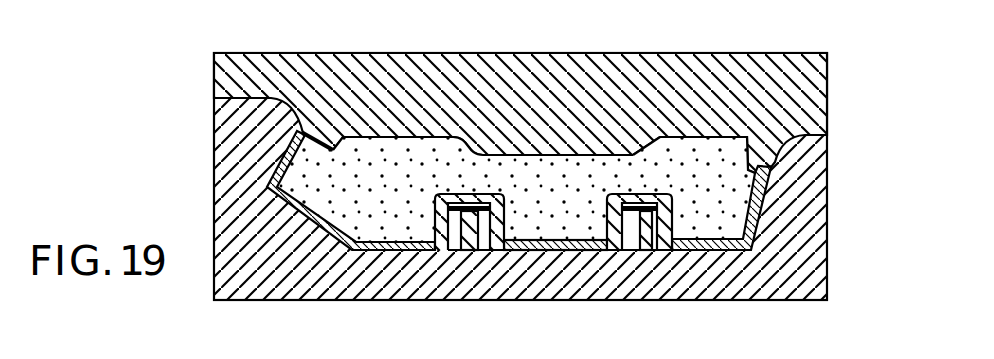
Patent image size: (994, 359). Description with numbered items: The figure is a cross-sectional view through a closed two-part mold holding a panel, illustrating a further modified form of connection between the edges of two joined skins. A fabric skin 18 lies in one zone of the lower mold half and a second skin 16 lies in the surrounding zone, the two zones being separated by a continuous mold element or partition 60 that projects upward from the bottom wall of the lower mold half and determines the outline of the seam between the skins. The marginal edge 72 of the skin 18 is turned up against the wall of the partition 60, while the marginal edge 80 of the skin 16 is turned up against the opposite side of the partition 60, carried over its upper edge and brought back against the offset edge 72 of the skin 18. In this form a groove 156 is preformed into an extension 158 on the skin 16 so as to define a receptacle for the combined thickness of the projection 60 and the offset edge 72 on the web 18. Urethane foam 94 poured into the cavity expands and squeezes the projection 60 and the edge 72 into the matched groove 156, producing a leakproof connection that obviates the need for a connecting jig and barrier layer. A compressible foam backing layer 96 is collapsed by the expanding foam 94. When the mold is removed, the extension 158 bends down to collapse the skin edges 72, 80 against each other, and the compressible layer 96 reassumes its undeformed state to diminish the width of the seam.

The skin 16 is at (387, 252).
The fabric skin 18 is at (540, 227).
The mold element/partition 60 is at (458, 206).
The marginal edge 72 is at (484, 237).
The marginal edge 80 is at (433, 192).
The foam 94 is at (713, 163).
The foam backing layer 96 is at (590, 225).
The groove 156 is at (650, 212).
The extension 158 is at (471, 206).